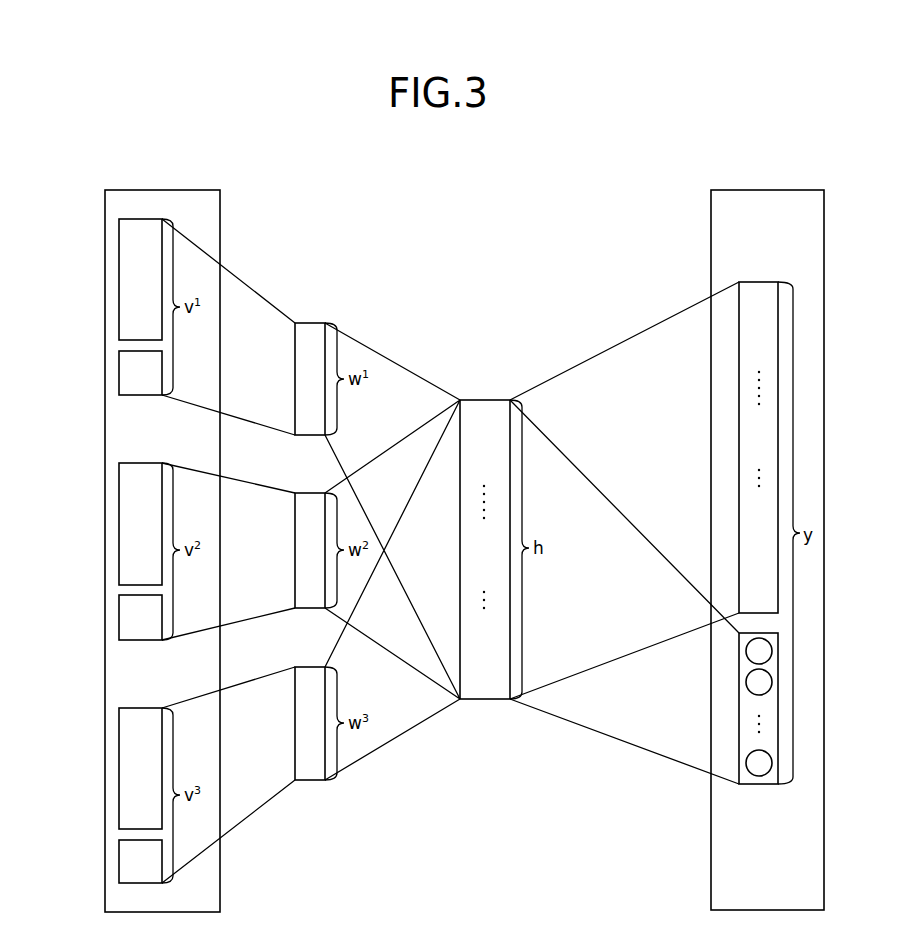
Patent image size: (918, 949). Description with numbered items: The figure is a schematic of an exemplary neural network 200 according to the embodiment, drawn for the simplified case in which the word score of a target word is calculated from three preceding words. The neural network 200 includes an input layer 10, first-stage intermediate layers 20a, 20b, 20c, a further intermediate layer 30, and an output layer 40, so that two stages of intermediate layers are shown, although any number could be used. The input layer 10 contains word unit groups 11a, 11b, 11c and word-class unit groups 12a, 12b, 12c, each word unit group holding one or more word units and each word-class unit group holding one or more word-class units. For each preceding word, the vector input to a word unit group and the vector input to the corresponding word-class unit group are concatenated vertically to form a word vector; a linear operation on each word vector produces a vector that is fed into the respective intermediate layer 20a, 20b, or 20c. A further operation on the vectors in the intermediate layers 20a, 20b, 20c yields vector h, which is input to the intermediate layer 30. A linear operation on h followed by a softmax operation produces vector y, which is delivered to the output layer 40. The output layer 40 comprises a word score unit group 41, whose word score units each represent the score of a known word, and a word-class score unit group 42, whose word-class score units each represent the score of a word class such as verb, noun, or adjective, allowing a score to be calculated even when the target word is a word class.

The input layer 10 is at (177, 190).
The word unit group 11a is at (119, 285).
The word-class unit group 12a is at (119, 372).
The word unit group 11b is at (119, 517).
The word-class unit group 12b is at (119, 617).
The word unit group 11c is at (119, 765).
The word-class unit group 12c is at (119, 860).
The intermediate layer 20a is at (295, 372).
The intermediate layer 20b is at (295, 545).
The intermediate layer 20c is at (295, 722).
The intermediate layer 30 is at (488, 400).
The output layer 40 is at (777, 190).
The word score unit group 41 is at (739, 447).
The word-class score unit group 42 is at (739, 697).
The neural network 200 is at (483, 205).